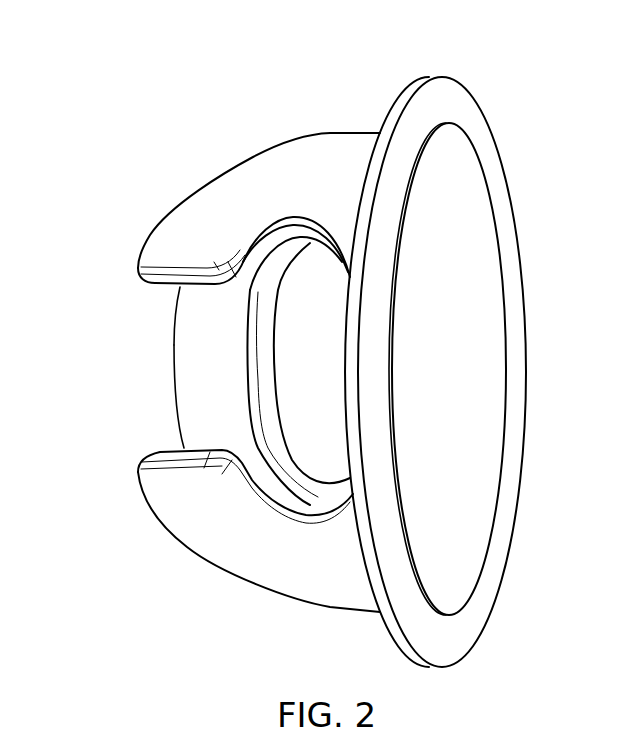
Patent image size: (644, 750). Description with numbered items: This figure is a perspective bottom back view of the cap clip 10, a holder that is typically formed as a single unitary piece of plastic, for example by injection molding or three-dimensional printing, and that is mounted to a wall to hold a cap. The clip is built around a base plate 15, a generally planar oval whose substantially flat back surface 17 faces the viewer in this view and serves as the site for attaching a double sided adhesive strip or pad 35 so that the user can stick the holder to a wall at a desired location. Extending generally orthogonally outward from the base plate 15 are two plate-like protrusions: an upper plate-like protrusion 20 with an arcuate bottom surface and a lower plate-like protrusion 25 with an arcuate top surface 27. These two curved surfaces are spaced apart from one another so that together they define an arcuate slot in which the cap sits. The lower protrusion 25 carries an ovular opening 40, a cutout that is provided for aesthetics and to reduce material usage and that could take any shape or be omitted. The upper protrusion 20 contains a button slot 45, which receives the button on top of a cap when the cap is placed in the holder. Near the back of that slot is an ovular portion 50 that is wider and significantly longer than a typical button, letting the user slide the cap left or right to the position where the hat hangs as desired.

The cap clip 10 is at (226, 48).
The base plate 15 is at (503, 152).
The back surface 17 is at (500, 473).
The upper plate-like protrusion 20 is at (188, 547).
The lower plate-like protrusion 25 is at (185, 397).
The arcuate top surface 27 is at (202, 332).
The double sided adhesive strip or pad 35 is at (448, 383).
The ovular opening 40 is at (270, 320).
The button slot 45 is at (183, 285).
The ovular portion 50 is at (250, 483).